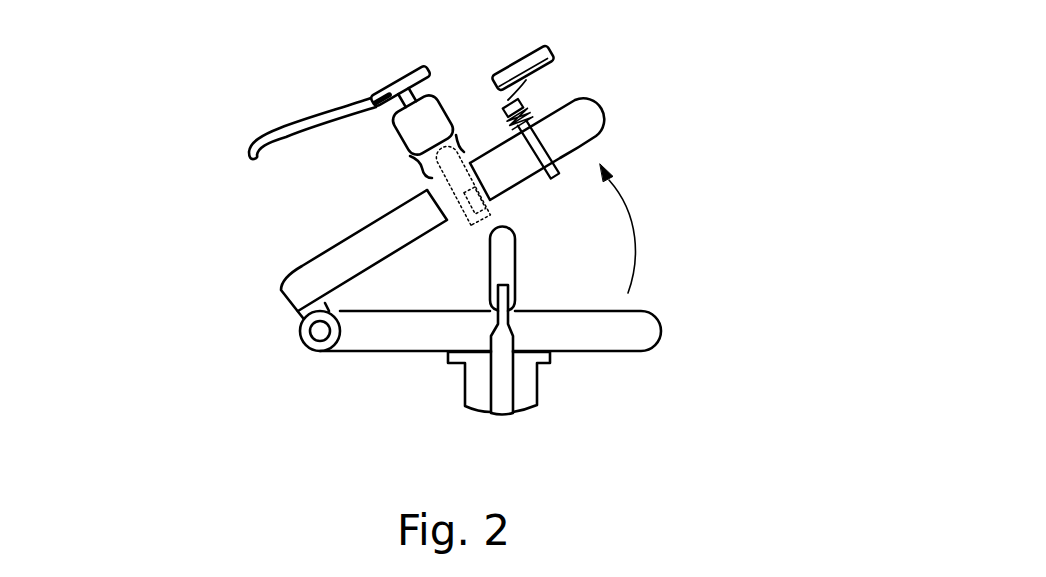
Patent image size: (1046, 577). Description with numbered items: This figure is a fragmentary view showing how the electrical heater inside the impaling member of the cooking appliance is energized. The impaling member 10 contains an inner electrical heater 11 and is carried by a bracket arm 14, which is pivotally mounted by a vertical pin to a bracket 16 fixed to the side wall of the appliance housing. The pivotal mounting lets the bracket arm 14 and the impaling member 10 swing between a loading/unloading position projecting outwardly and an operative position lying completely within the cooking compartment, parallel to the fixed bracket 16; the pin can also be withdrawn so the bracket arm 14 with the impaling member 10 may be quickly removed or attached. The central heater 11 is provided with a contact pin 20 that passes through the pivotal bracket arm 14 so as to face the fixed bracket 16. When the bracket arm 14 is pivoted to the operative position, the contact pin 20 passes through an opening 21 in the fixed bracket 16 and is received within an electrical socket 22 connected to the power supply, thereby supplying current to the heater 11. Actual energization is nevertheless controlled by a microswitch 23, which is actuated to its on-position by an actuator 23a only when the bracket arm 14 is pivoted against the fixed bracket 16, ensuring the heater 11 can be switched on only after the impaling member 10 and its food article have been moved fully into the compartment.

The impaling member 10 is at (508, 414).
The electrical heater 11 is at (512, 310).
The bracket arm 14 is at (643, 349).
The bracket 16 is at (358, 251).
The contact pin 20 is at (515, 256).
The opening 21 is at (437, 197).
The electrical socket 22 is at (438, 107).
The microswitch 23 is at (555, 57).
The actuator 23a is at (597, 137).